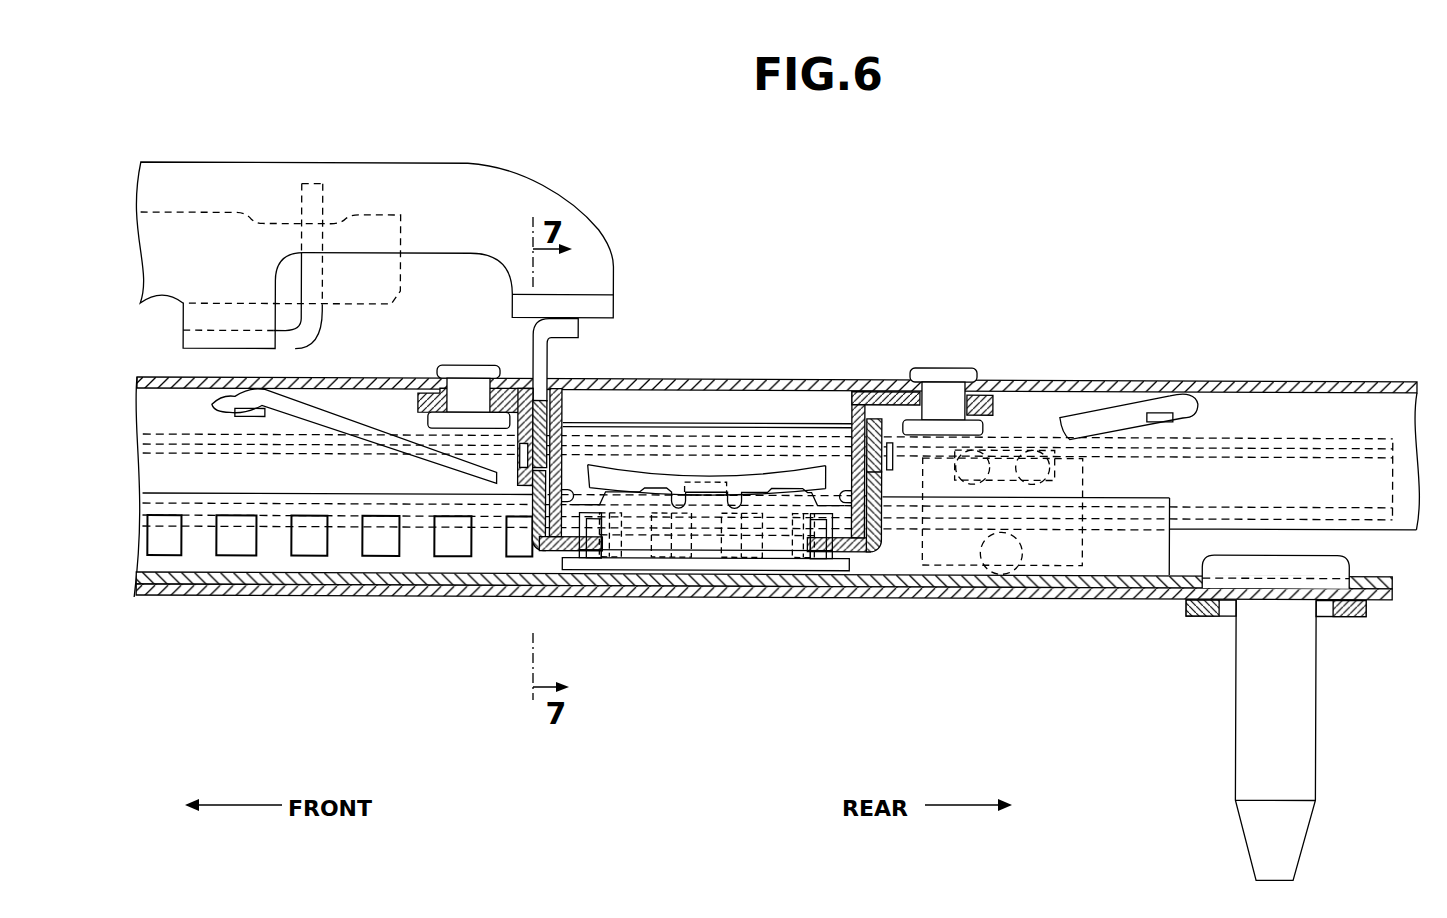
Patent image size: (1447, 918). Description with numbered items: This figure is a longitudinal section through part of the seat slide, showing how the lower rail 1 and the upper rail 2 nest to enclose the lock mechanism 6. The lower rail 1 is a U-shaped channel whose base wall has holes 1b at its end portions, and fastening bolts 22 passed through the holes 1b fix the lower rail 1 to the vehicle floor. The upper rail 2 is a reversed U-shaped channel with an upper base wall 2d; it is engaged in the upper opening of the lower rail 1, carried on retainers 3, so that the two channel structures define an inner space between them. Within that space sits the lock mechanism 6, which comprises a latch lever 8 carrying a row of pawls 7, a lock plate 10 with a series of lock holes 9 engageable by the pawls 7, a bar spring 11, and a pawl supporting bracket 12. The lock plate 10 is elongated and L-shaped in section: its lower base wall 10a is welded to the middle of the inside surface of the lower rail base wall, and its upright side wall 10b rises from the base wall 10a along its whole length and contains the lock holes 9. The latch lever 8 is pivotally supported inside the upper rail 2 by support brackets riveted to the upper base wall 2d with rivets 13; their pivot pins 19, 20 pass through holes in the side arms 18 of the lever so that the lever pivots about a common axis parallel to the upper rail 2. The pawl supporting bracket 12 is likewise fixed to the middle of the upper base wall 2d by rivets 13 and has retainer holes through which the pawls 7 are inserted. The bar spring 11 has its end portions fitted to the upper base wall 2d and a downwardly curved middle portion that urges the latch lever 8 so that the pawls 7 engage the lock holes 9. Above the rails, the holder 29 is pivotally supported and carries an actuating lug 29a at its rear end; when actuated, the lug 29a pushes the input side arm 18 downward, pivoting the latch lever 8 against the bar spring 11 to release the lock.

The lower rail 1 is at (1073, 612).
The holes 1b is at (1240, 598).
The upper rail 2 is at (1206, 370).
The upper base wall 2d is at (1287, 377).
The retainers 3 is at (960, 537).
The lock mechanism 6 is at (749, 408).
The pawls 7 is at (613, 550).
The latch lever 8 is at (858, 550).
The lock holes 9 is at (297, 541).
The lock plate 10 is at (188, 485).
The lower base wall 10a is at (215, 580).
The upright side wall 10b is at (268, 558).
The bar spring 11 is at (343, 427).
The pawl supporting bracket 12 is at (690, 420).
The rivets 13 is at (463, 390).
The side arms 18 is at (578, 325).
The pivot pin 19 is at (565, 428).
The pivot pin 20 is at (870, 458).
The fastening bolts 22 is at (1250, 742).
The holder 29 is at (443, 183).
The actuating lug 29a is at (593, 300).